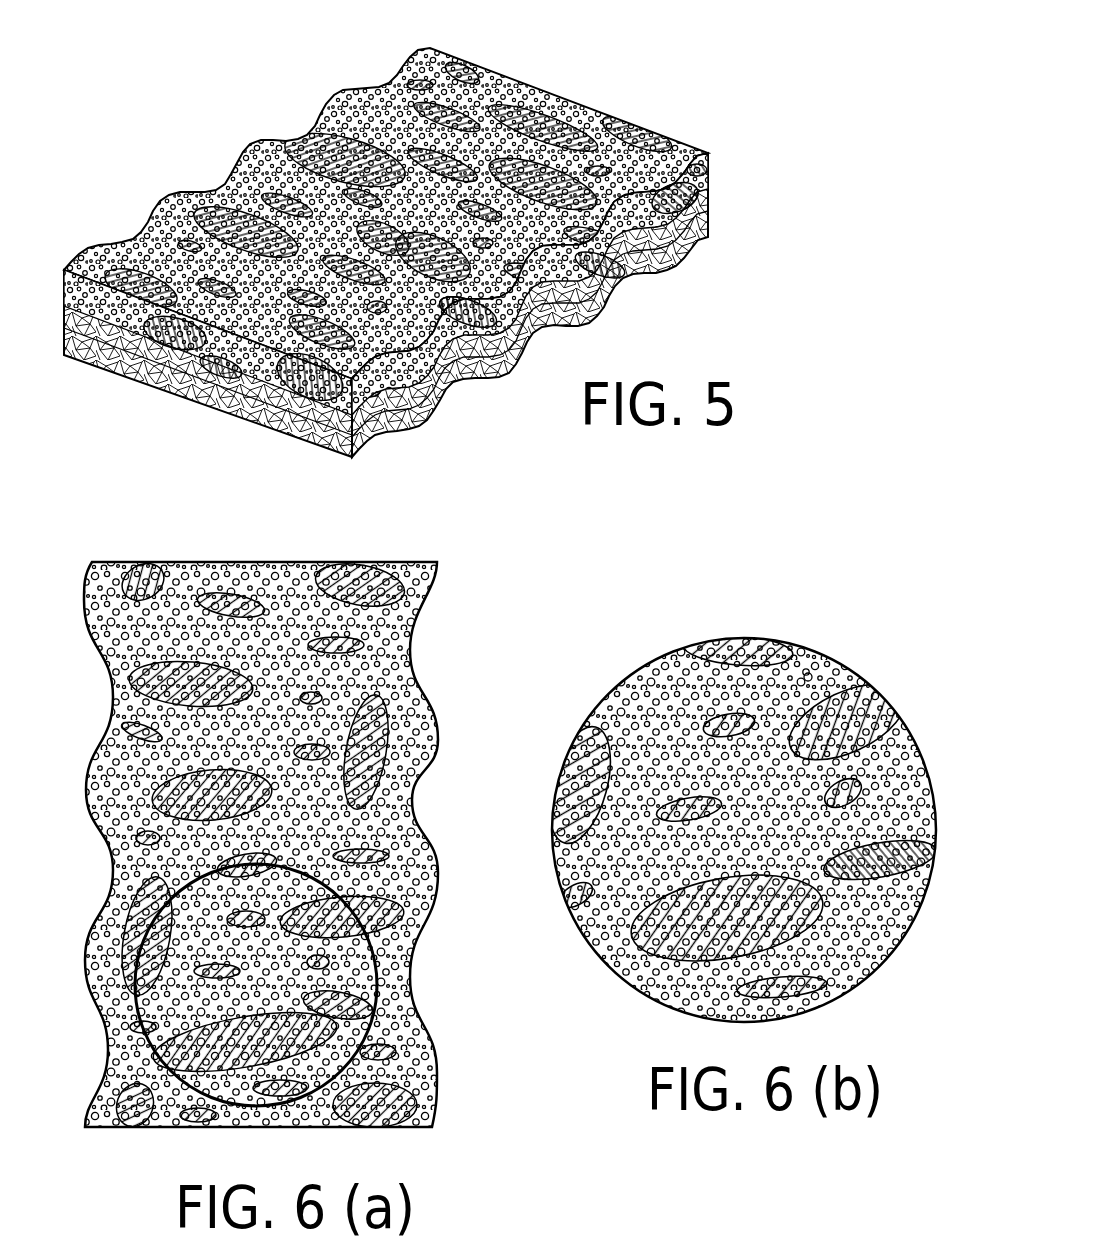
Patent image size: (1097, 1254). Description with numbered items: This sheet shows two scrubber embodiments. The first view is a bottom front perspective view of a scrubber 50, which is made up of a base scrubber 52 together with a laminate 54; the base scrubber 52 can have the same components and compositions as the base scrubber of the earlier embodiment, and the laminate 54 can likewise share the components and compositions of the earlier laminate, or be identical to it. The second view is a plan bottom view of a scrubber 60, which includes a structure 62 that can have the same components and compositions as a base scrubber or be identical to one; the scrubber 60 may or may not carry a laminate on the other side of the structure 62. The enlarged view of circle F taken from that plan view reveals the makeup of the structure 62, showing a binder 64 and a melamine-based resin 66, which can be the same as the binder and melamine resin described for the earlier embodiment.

In FIG. 5, the scrubber 50 is at (461, 236).
In FIG. 5, the base scrubber 52 is at (712, 155).
In FIG. 5, the laminate 54 is at (680, 243).
The scrubber 60 is at (337, 787).
The structure 62 is at (410, 645).
The binder 64 is at (845, 678).
The melamine-based resin 66 is at (810, 676).